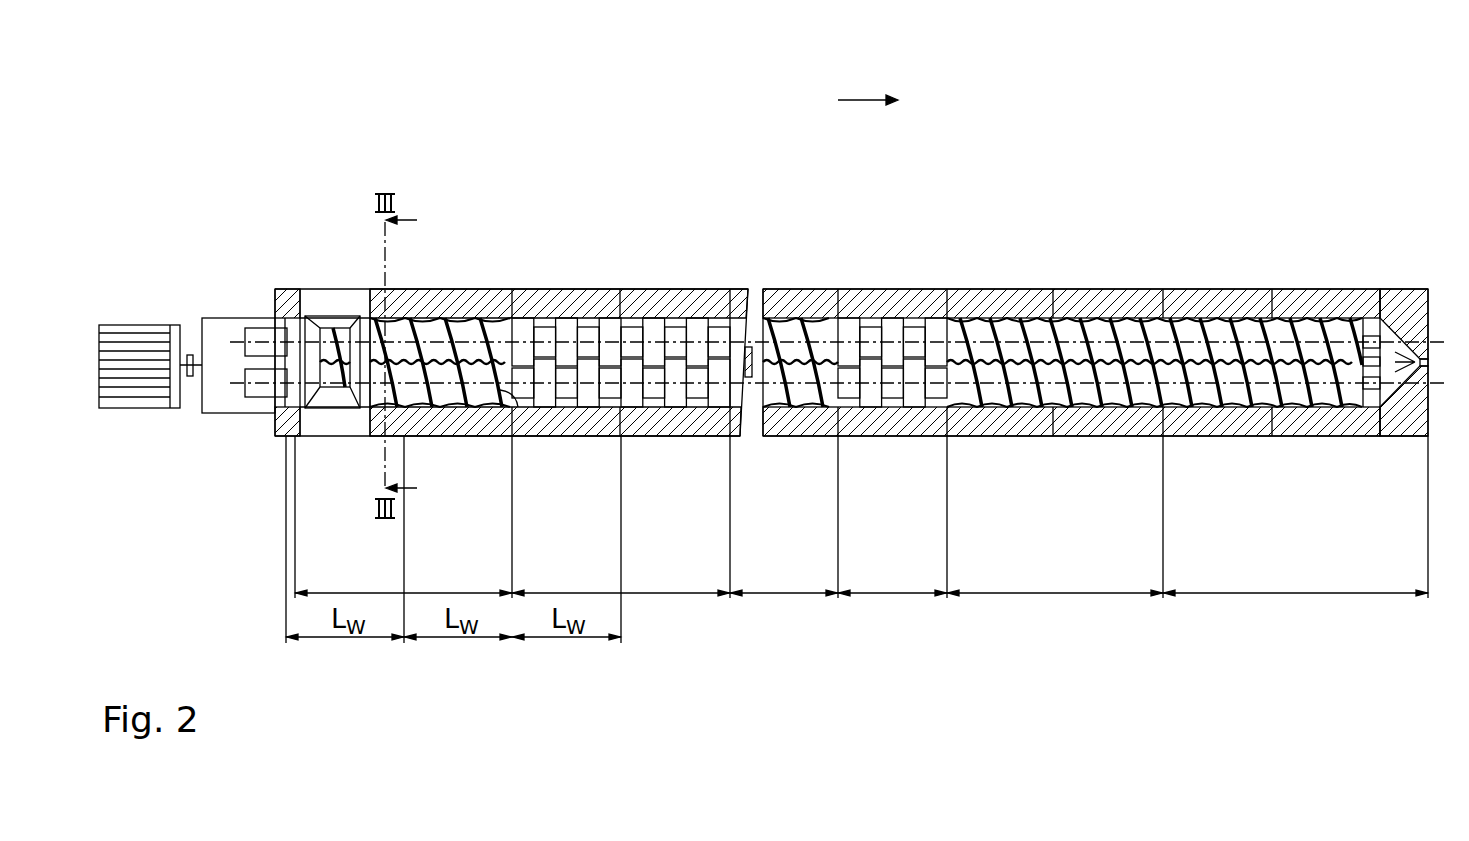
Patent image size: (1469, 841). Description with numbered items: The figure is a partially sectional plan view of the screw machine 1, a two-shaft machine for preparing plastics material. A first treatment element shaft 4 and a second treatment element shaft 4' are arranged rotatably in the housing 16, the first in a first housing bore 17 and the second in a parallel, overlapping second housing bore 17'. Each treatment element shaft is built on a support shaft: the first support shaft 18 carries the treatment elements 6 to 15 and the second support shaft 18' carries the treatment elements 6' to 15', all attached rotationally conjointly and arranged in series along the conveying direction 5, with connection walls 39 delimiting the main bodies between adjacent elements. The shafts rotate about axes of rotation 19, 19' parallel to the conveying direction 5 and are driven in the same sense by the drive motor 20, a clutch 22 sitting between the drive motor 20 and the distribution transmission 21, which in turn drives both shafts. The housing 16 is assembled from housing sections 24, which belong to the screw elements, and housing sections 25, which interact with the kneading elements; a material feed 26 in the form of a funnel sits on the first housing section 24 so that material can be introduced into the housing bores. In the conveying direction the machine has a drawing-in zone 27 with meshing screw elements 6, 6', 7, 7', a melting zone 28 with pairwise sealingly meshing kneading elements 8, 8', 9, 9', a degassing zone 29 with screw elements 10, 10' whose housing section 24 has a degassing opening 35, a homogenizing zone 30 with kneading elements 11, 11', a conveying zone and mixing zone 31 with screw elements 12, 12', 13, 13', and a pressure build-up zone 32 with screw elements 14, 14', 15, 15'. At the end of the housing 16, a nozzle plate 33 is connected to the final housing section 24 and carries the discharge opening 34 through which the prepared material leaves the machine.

The screw machine 1 is at (789, 78).
The conveying direction 5 is at (866, 99).
The drive motor 20 is at (122, 333).
The clutch 22 is at (186, 355).
The distribution transmission 21 is at (226, 318).
The first support shaft 18 is at (236, 446).
The second support shaft 18' is at (270, 271).
The material feed 26 is at (327, 318).
The screw element 6 is at (315, 426).
The screw element 6' is at (356, 297).
The screw element 7 is at (440, 421).
The screw element 7' is at (440, 254).
The first housing bore 17 is at (440, 464).
The second housing bore 17' is at (490, 254).
The connection walls 39 is at (507, 400).
The kneading element 8 is at (566, 421).
The kneading element 8' is at (537, 258).
The kneading element 9 is at (675, 421).
The kneading element 9' is at (683, 258).
The first treatment element shaft 4 is at (459, 464).
The second treatment element shaft 4' is at (446, 255).
The housing 16 is at (621, 280).
The housing section 24 is at (410, 436).
The housing section 25 is at (661, 437).
The degassing opening 35 is at (756, 330).
The screw element 10 is at (800, 421).
The screw element 10' is at (820, 258).
The kneading element 11 is at (892, 421).
The kneading element 11' is at (878, 258).
The axis of rotation 19 is at (1154, 421).
The axis of rotation 19' is at (945, 256).
The screw element 12 is at (1040, 421).
The screw element 12' is at (1005, 258).
The screw element 13 is at (1114, 421).
The screw element 13' is at (1115, 258).
The screw element 14 is at (1226, 421).
The screw element 14' is at (1172, 258).
The screw element 15 is at (1335, 421).
The screw element 15' is at (1360, 258).
The nozzle plate 33 is at (1417, 300).
The discharge opening 34 is at (1429, 363).
The drawing-in zone 27 is at (403, 579).
The melting zone 28 is at (621, 579).
The degassing zone 29 is at (784, 579).
The homogenizing zone 30 is at (892, 579).
The conveying zone and mixing zone 31 is at (1055, 579).
The pressure build-up zone 32 is at (1295, 579).